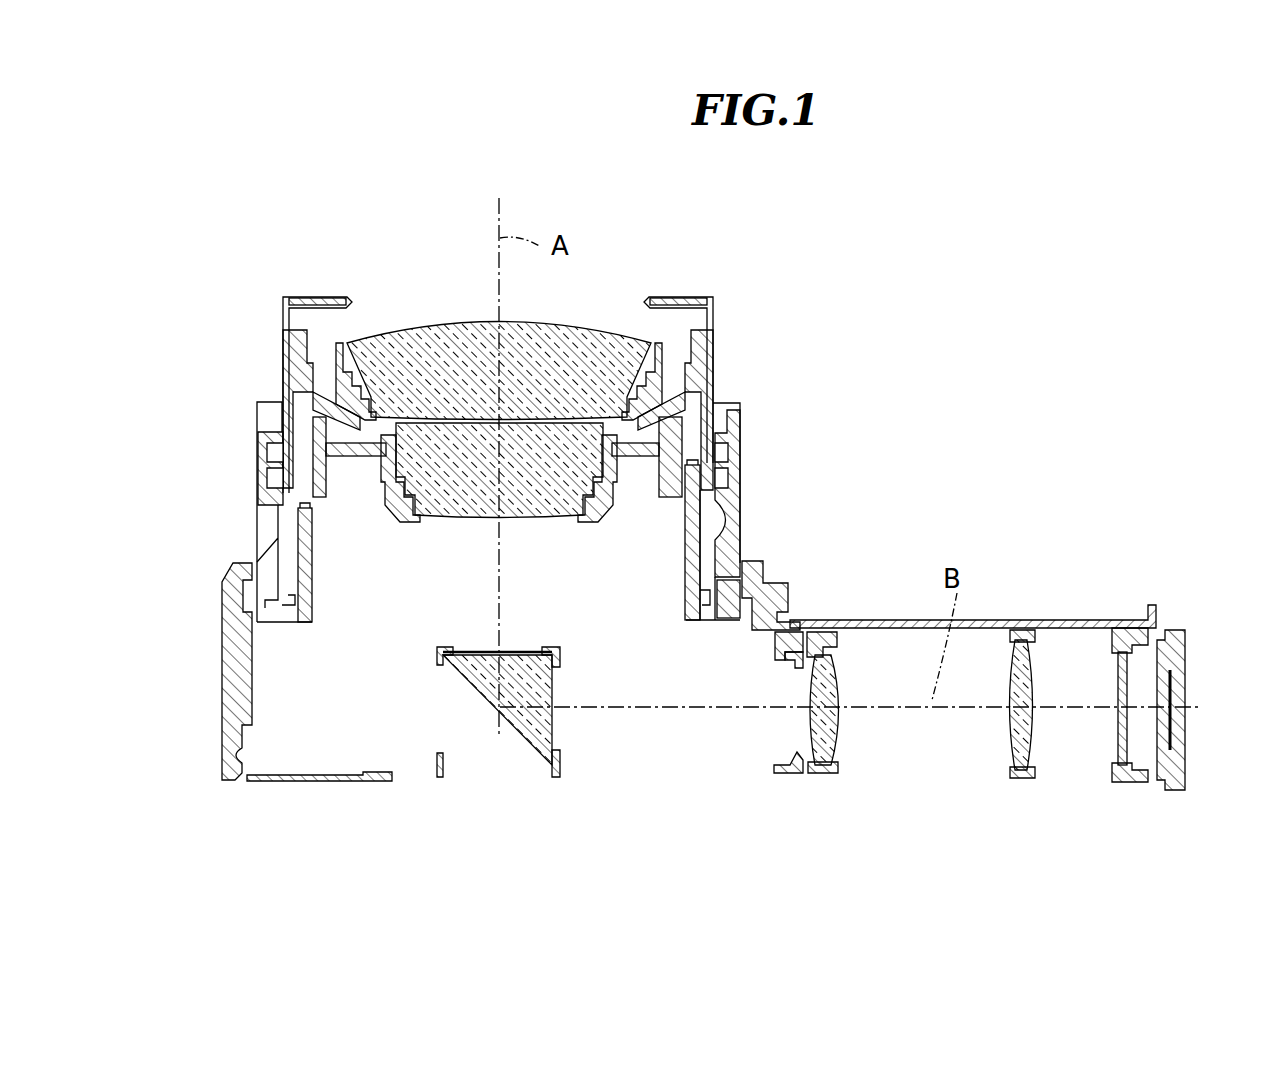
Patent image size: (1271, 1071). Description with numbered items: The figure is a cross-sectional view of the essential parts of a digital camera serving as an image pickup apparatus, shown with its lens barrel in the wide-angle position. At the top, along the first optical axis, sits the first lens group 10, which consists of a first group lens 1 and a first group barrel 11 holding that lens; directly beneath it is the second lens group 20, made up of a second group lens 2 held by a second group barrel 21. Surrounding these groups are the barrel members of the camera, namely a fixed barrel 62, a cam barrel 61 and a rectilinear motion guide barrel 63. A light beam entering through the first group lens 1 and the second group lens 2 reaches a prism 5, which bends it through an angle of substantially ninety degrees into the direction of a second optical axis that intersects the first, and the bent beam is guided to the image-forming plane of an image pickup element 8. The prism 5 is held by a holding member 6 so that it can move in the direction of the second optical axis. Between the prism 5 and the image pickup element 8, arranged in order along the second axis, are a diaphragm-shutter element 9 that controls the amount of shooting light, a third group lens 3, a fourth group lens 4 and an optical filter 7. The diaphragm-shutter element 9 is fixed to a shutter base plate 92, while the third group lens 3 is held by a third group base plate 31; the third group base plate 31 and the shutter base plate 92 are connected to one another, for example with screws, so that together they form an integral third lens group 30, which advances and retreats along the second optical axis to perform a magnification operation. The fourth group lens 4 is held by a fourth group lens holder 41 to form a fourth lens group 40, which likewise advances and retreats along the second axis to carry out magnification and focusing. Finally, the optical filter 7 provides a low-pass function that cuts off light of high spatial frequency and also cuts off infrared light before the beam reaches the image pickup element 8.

The first lens group 10 is at (231, 331).
The first group barrel 11 is at (298, 376).
The first group lens 1 is at (437, 338).
The second group lens 2 is at (443, 512).
The second lens group 20 is at (370, 505).
The second group barrel 21 is at (390, 492).
The cam barrel 61 is at (723, 490).
The fixed barrel 62 is at (790, 597).
The rectilinear motion guide barrel 63 is at (695, 545).
The shutter base plate 92 is at (777, 651).
The diaphragm-shutter element 9 is at (803, 660).
The third group lens 3 is at (840, 745).
The third group base plate 31 is at (824, 773).
The third lens group 30 is at (858, 763).
The fourth group lens 4 is at (1030, 748).
The fourth group lens holder 41 is at (1018, 778).
The fourth lens group 40 is at (1049, 762).
The prism 5 is at (465, 670).
The holding member 6 is at (560, 762).
The optical filter 7 is at (1125, 753).
The image pickup element 8 is at (1182, 682).